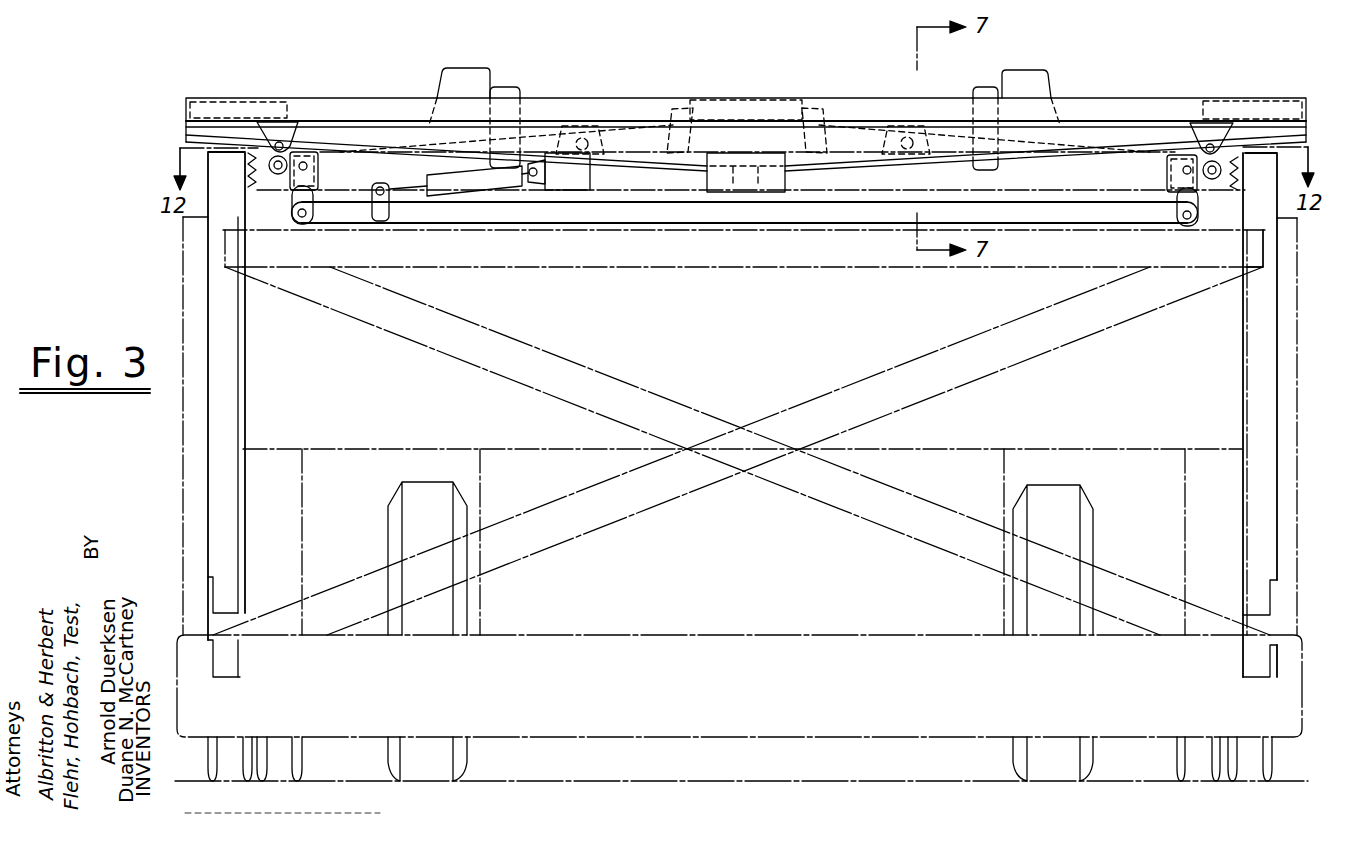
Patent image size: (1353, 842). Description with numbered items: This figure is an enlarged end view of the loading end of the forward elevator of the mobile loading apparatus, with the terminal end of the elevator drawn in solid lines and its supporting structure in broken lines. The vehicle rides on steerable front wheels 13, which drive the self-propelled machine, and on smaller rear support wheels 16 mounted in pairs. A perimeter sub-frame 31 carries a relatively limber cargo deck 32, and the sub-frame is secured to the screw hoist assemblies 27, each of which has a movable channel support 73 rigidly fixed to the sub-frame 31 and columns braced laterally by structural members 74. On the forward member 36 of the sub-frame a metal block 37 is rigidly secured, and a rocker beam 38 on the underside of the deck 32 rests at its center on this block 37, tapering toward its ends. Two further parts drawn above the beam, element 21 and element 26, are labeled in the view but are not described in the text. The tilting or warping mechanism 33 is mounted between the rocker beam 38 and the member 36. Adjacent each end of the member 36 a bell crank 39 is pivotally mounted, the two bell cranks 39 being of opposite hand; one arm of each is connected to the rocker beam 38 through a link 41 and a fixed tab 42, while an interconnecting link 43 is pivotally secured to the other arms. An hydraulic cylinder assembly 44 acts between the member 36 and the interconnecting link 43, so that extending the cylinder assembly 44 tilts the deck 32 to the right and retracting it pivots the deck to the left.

The steerable front wheels 13 is at (466, 762).
The rear support wheels 16 is at (227, 773).
The stop block 21 is at (507, 87).
The pad block 26 is at (440, 83).
The screw hoist assemblies 27 is at (198, 269).
The perimeter sub-frame 31 is at (247, 175).
The cargo deck 32 is at (283, 98).
The tilting or warping mechanism 33 is at (642, 197).
The forward member of the sub-frame 36 is at (673, 180).
The metal block 37 is at (770, 183).
The rocker beam 38 is at (1078, 137).
The bell crank 39 is at (310, 203).
The link 41 is at (247, 164).
The fixed tab 42 is at (268, 122).
The interconnecting link 43 is at (812, 212).
The hydraulic cylinder assembly 44 is at (458, 184).
The movable channel support 73 is at (1265, 257).
The structural members 74 is at (763, 488).